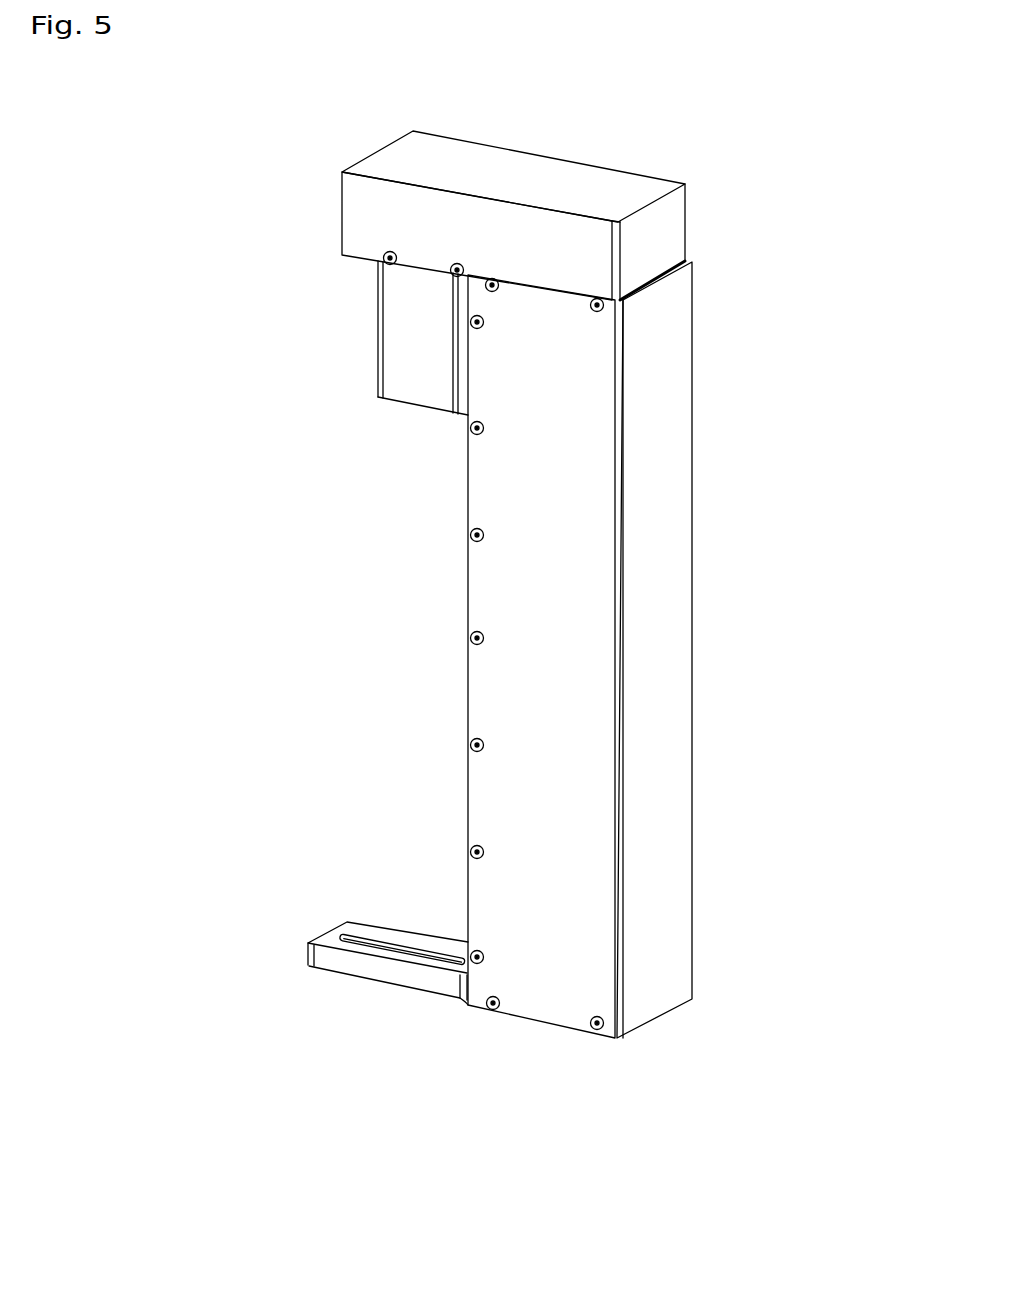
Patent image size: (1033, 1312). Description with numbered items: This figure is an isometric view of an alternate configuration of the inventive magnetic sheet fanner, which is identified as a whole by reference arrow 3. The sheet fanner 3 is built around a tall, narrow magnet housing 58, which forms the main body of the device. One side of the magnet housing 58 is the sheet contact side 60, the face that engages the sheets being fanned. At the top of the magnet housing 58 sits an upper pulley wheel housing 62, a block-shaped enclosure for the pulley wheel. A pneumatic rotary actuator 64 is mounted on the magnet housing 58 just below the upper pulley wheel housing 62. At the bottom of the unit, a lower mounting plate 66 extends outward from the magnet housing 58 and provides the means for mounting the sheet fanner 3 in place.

The magnetic sheet fanner 3 is at (347, 677).
The magnet housing 58 is at (523, 764).
The sheet contact side 60 is at (653, 547).
The upper pulley wheel housing 62 is at (557, 181).
The pneumatic rotary actuator 64 is at (425, 348).
The lower mounting plate 66 is at (383, 969).